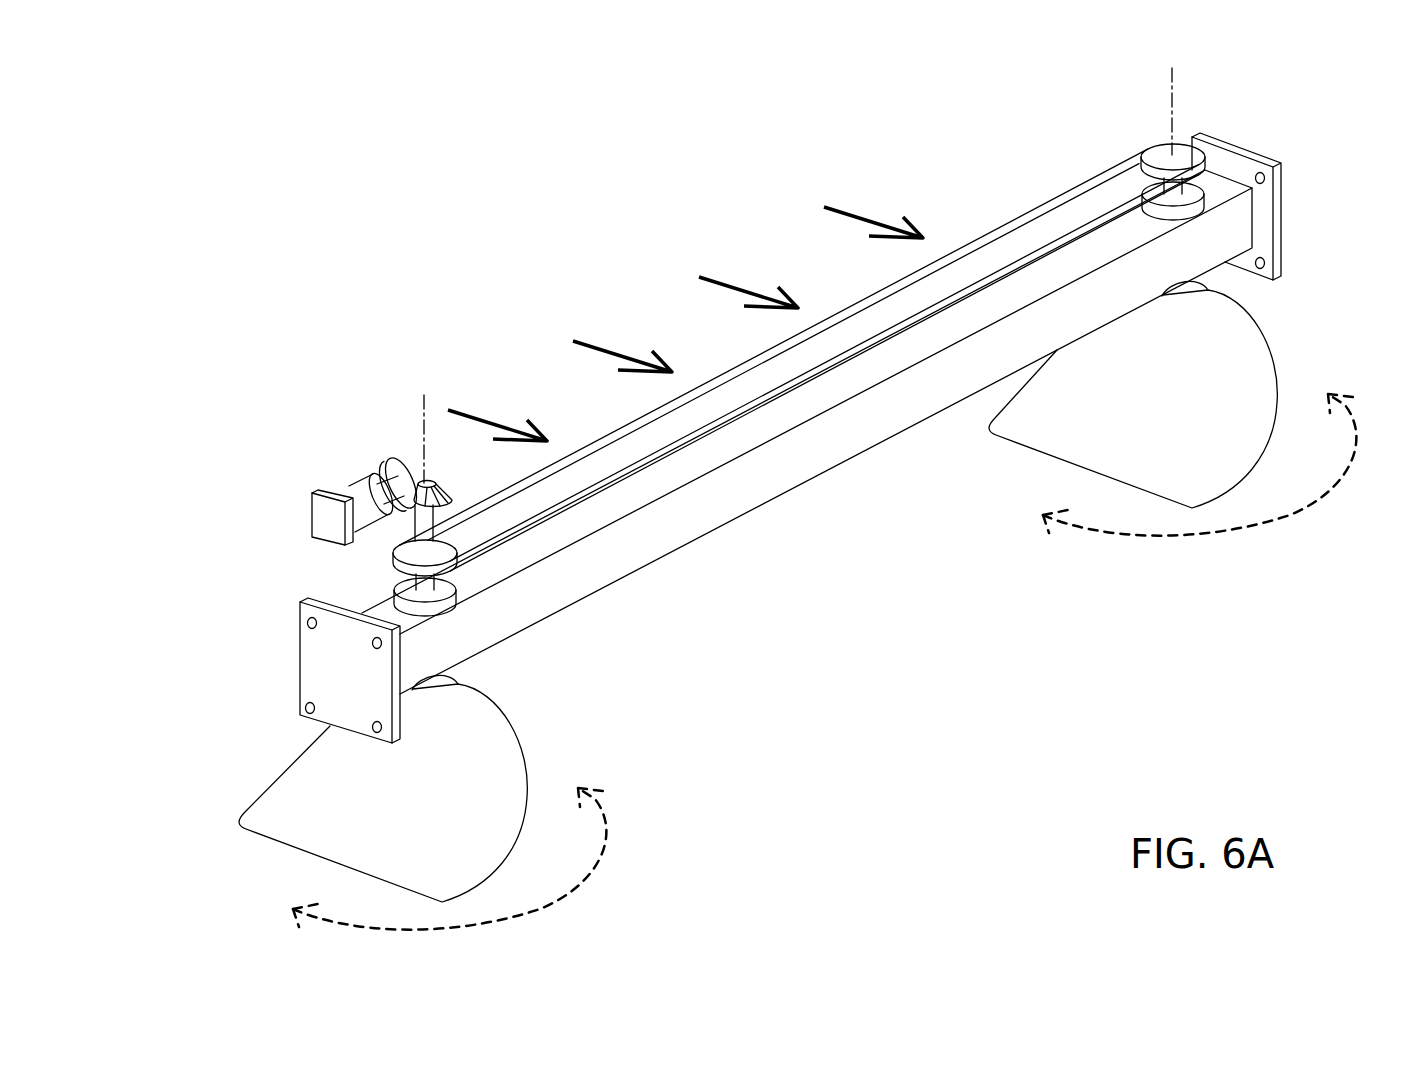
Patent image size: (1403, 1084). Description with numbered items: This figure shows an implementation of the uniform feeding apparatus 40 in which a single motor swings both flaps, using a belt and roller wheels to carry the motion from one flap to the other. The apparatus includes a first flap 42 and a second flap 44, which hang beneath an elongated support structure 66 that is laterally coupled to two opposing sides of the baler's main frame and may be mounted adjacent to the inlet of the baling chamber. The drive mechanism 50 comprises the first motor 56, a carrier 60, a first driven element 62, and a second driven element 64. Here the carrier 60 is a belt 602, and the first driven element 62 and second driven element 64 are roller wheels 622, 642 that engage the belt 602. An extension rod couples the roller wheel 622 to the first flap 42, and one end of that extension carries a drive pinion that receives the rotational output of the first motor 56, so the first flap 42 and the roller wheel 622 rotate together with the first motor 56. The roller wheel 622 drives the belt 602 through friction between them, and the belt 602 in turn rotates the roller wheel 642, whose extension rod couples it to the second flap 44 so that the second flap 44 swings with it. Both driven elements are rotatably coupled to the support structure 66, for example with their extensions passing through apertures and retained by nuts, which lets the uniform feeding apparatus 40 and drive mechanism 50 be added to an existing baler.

The uniform feeding apparatus 40 is at (748, 499).
The first flap 42 is at (565, 760).
The second flap 44 is at (985, 480).
The drive mechanism 50 is at (672, 342).
The first motor 56 is at (353, 490).
The carrier 60 is at (799, 360).
The belt 602 is at (719, 343).
The first driven element 62 is at (337, 505).
The roller wheel 622 is at (395, 550).
The second driven element 64 is at (1117, 144).
The roller wheel 642 is at (1160, 150).
The support structure 66 is at (828, 465).